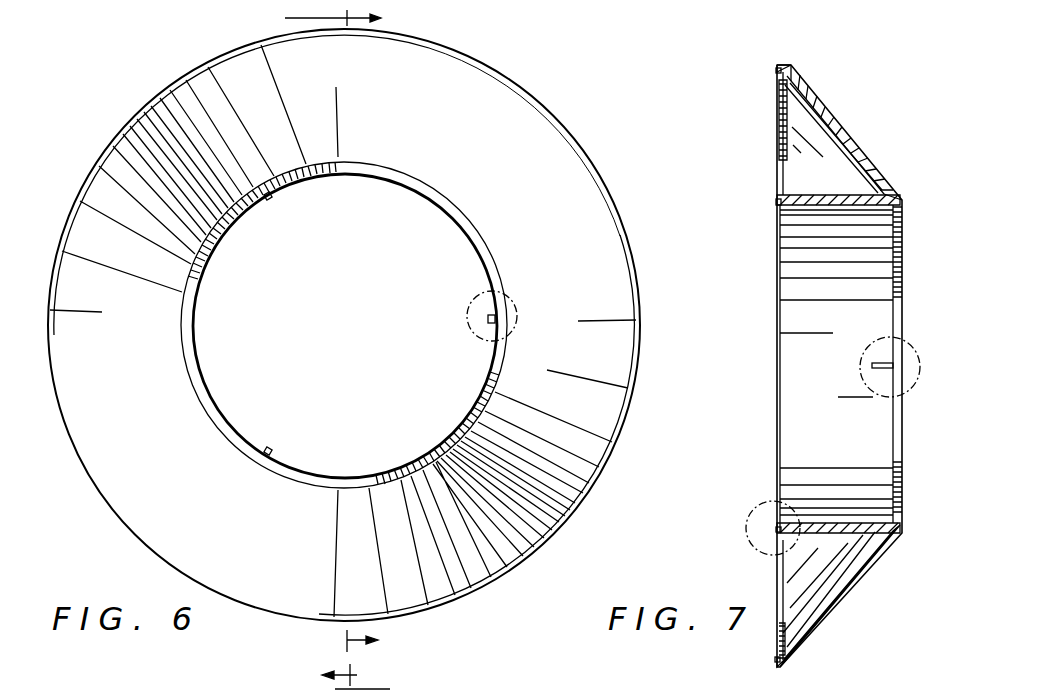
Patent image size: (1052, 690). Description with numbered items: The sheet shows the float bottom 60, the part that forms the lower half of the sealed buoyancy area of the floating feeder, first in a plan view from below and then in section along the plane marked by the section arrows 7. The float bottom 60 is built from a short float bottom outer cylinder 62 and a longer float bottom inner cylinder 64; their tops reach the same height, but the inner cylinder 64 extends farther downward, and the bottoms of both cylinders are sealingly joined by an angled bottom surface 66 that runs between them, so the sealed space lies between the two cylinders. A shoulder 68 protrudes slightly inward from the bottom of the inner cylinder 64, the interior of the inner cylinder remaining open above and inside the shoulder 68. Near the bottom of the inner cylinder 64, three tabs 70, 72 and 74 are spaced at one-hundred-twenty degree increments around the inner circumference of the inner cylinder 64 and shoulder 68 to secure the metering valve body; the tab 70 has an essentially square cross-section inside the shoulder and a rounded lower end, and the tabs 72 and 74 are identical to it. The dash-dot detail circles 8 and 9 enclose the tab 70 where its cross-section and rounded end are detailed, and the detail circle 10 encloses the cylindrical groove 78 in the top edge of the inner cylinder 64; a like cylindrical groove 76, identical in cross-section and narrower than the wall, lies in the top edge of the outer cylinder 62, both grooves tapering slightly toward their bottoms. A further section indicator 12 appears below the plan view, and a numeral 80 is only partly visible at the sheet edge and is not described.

In FIG. 6, the float bottom 60 is at (135, 96).
In FIG. 7, the float bottom 60 is at (885, 160).
In FIG. 6, the float bottom outer cylinder 62 is at (542, 103).
In FIG. 7, the float bottom outer cylinder 62 is at (783, 63).
In FIG. 7, the float bottom inner cylinder 64 is at (820, 196).
In FIG. 7, the angled bottom surface 66 is at (848, 137).
In FIG. 6, the shoulder 68 is at (446, 212).
In FIG. 7, the shoulder 68 is at (902, 224).
In FIG. 6, the tab 70 is at (487, 320).
In FIG. 7, the tab 70 is at (872, 366).
In FIG. 6, the tab 72 is at (271, 201).
In FIG. 6, the tab 74 is at (273, 450).
In FIG. 7, the cylindrical groove 76 is at (776, 71).
In FIG. 7, the cylindrical groove 78 is at (776, 203).
In FIG. 7, the element 80 is at (905, 685).
In FIG. 6, the section line 7- 7 is at (322, 331).
In FIG. 6, the detail circle FIG. 8 is at (470, 309).
In FIG. 7, the detail circle FIG. 9 is at (920, 368).
In FIG. 7, the detail circle FIG. 10 is at (746, 538).
In FIG. 6, the section line 12- 12 is at (359, 676).